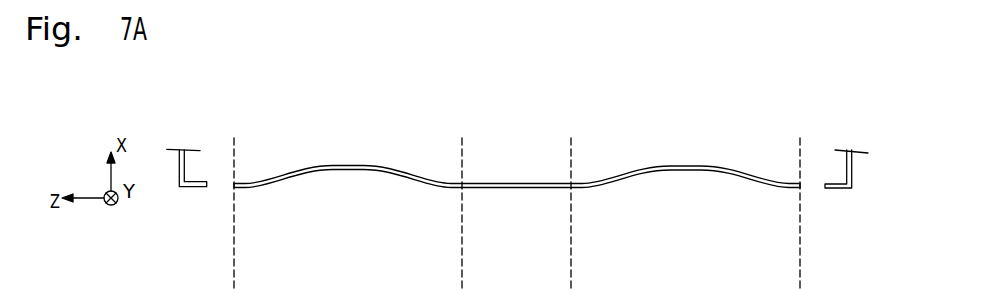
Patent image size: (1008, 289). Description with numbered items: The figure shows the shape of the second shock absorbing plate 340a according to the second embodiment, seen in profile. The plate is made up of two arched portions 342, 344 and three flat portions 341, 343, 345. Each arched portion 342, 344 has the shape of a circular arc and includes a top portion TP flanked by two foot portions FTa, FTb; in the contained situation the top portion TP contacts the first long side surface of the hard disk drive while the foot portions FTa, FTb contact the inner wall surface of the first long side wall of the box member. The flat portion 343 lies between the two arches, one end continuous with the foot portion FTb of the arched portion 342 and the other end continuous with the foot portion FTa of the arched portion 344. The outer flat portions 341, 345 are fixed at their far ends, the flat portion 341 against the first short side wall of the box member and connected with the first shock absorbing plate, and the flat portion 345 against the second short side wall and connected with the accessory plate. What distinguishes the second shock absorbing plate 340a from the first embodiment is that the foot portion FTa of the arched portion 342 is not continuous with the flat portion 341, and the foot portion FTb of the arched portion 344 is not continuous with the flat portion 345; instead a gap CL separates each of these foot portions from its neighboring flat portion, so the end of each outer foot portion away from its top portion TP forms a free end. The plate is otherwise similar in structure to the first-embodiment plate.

The second shock absorbing plate 340a is at (260, 95).
The flat portion 341 is at (193, 188).
The arched portion 342 is at (327, 170).
The flat portion 343 is at (512, 188).
The arched portion 344 is at (658, 175).
The flat portion 345 is at (832, 190).
The gap CL is at (218, 182).
The top portion TP is at (344, 166).
The foot portion FTa is at (246, 181).
The foot portion FTb is at (428, 175).